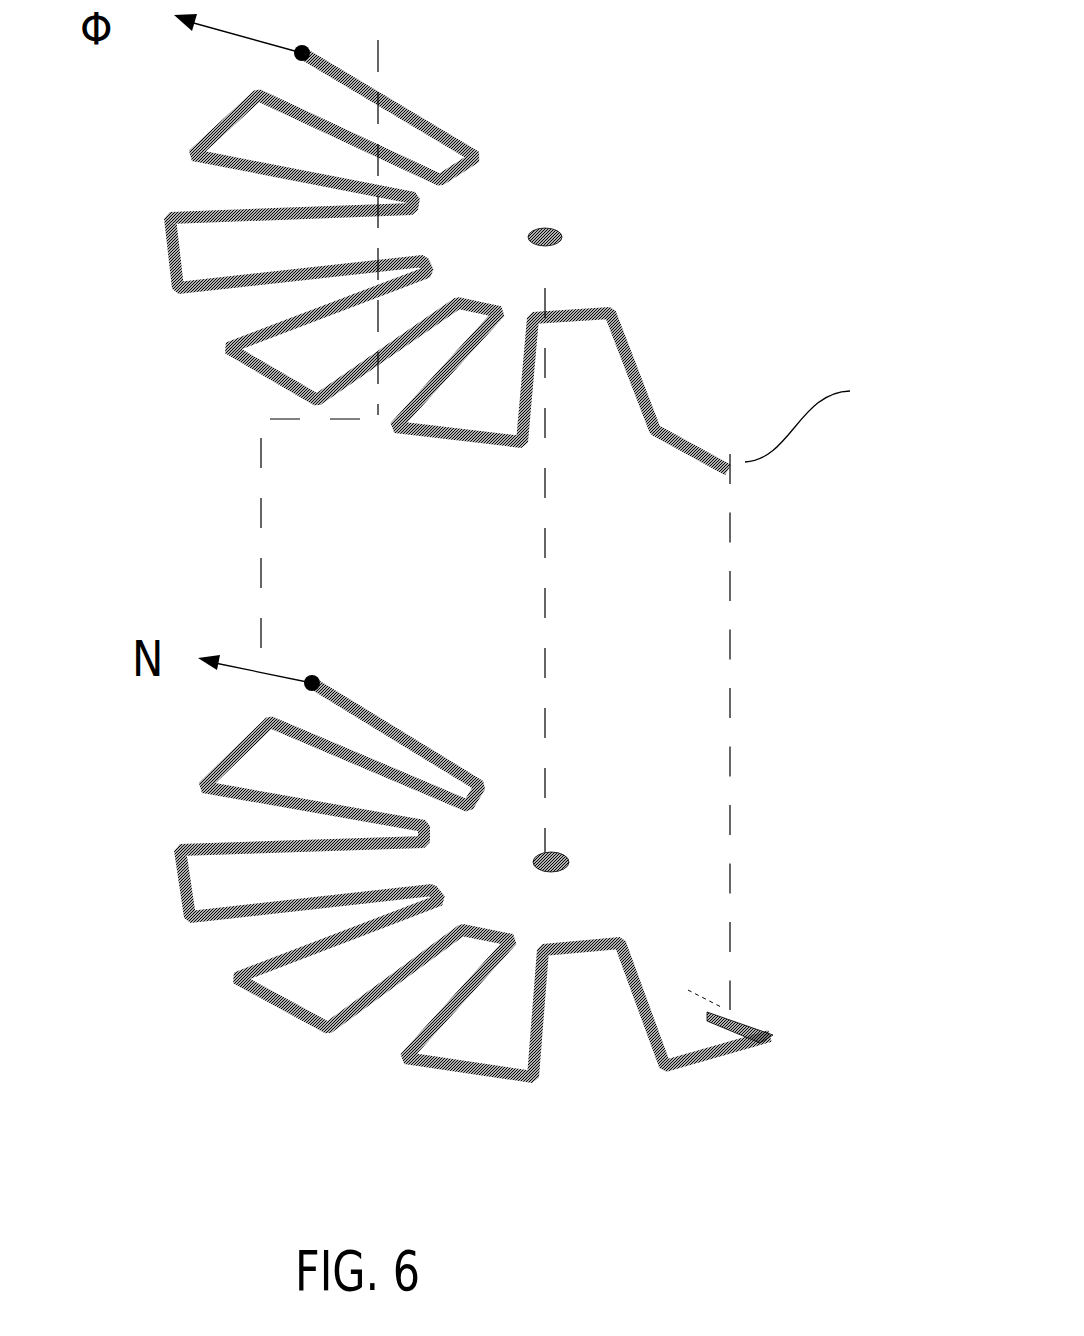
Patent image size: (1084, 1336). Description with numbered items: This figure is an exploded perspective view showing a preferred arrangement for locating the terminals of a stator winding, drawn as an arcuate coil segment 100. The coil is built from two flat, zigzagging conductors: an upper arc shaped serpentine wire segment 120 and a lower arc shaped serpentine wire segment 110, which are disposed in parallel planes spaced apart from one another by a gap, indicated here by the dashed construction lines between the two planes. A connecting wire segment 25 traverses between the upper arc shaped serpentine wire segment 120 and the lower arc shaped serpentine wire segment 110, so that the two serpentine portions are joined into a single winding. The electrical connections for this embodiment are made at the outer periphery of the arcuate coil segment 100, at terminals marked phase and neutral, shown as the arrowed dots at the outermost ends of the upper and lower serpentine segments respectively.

The arcuate coil segment 100 is at (678, 137).
The upper arc shaped serpentine wire segment 120 is at (742, 293).
The lower arc shaped serpentine wire segment 110 is at (808, 785).
The connecting wire segment 25 is at (745, 993).